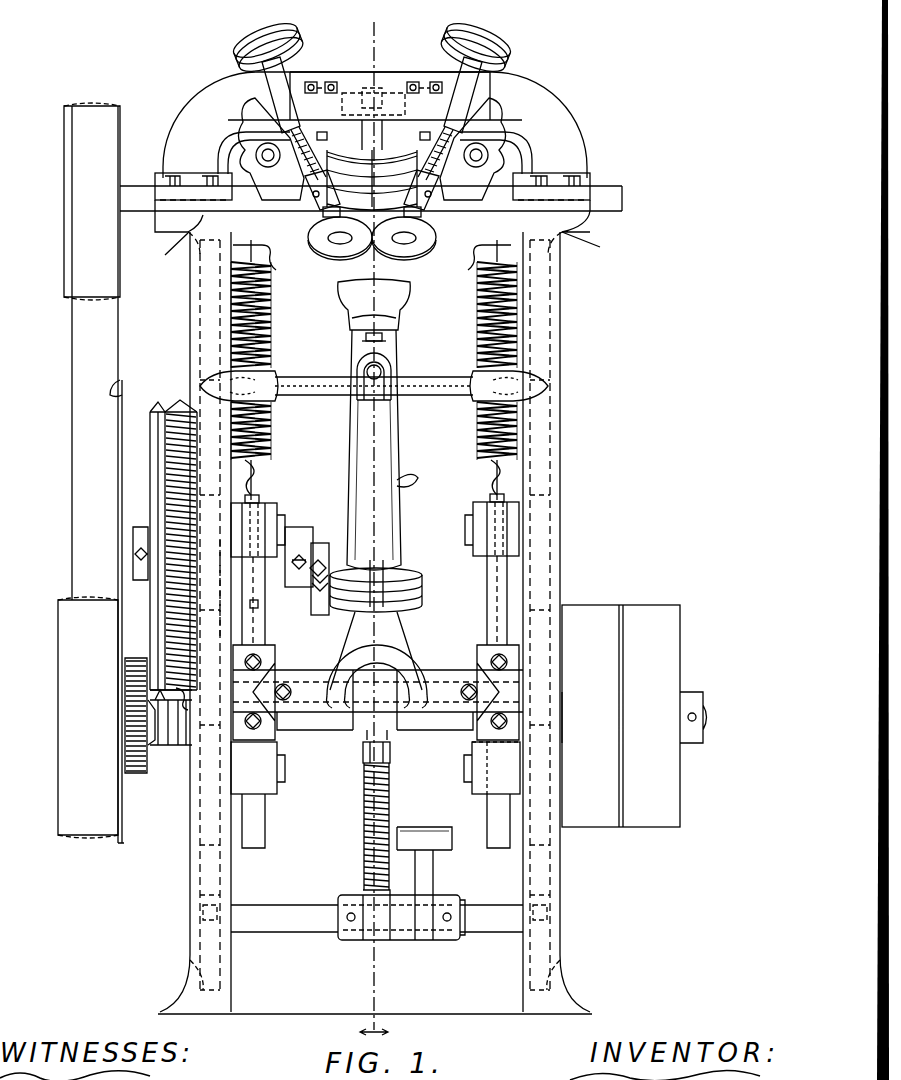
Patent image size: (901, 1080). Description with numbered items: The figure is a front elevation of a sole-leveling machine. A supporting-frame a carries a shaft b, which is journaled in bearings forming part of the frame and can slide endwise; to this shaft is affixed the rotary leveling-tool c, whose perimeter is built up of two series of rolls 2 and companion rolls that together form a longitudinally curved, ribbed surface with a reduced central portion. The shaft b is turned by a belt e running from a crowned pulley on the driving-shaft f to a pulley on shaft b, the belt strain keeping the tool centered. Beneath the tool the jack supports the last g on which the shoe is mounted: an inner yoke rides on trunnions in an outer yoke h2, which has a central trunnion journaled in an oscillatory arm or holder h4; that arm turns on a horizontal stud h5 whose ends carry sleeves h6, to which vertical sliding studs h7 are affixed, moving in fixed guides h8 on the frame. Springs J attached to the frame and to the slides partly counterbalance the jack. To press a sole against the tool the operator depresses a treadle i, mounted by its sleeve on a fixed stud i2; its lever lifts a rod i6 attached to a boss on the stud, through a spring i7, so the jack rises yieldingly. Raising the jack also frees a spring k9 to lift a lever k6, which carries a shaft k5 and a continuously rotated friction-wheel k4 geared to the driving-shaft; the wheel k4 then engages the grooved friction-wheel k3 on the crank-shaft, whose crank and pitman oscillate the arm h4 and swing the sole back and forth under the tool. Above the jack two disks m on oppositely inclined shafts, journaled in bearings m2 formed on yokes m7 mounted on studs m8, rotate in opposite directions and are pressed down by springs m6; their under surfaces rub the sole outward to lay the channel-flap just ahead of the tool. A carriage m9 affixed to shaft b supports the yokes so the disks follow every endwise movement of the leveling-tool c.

The rolls 2 is at (375, 528).
The supporting-frame a is at (547, 482).
The shaft b is at (607, 190).
The belt e is at (80, 350).
The driving-shaft f is at (321, 733).
The last g is at (400, 335).
The outer yoke h2 is at (400, 522).
The oscillatory arm or holder h4 is at (410, 612).
The horizontal stud h5 is at (438, 730).
The sleeves h6 is at (478, 650).
The vertical sliding studs h7 is at (495, 590).
The fixed guides h8 is at (495, 808).
The treadle i is at (436, 880).
The fixed stud i2 is at (315, 923).
The rod i6 is at (391, 748).
The spring i7 is at (362, 805).
The springs J is at (480, 340).
The friction-wheel k3 is at (156, 645).
The complemental friction member k4 is at (165, 748).
The shaft k5 is at (150, 748).
The lever k6 is at (184, 748).
The spring k9 is at (168, 467).
The disks m is at (418, 256).
The bearings m2 is at (390, 94).
The springs m6 is at (500, 133).
The yokes m7 is at (460, 175).
The studs m8 is at (490, 152).
The carriage m9 is at (280, 250).
The rotary leveling-tool c is at (355, 155).